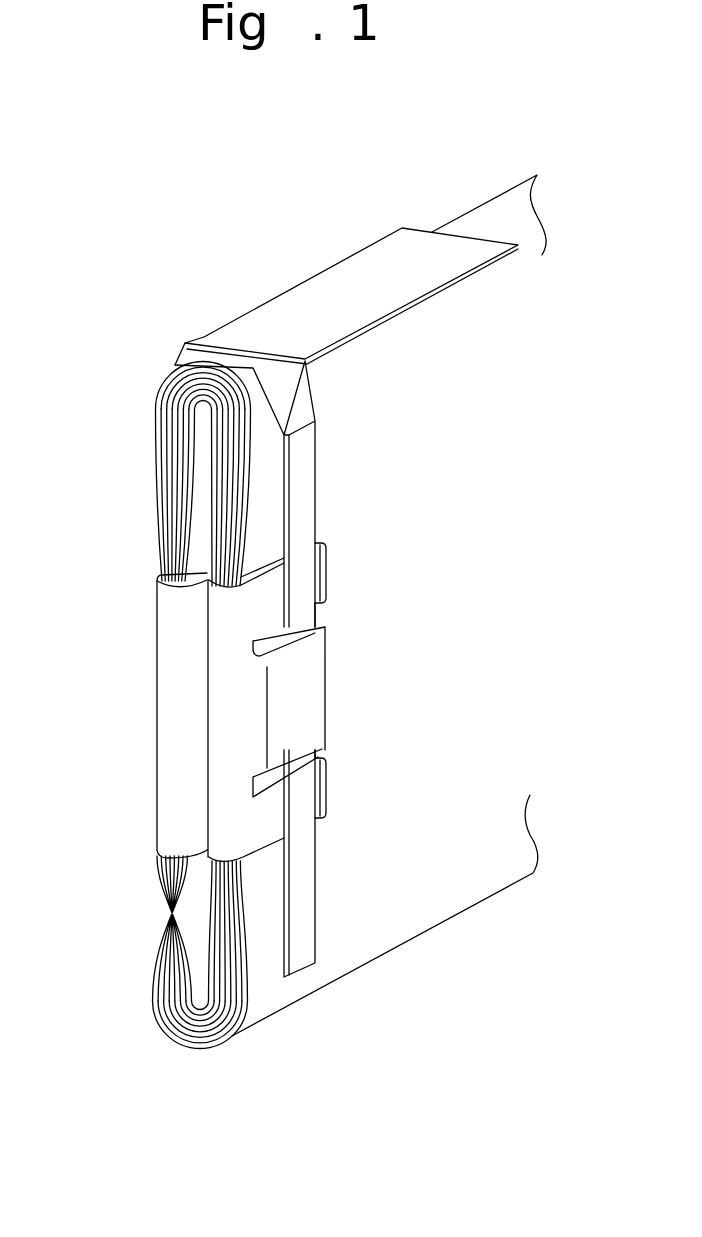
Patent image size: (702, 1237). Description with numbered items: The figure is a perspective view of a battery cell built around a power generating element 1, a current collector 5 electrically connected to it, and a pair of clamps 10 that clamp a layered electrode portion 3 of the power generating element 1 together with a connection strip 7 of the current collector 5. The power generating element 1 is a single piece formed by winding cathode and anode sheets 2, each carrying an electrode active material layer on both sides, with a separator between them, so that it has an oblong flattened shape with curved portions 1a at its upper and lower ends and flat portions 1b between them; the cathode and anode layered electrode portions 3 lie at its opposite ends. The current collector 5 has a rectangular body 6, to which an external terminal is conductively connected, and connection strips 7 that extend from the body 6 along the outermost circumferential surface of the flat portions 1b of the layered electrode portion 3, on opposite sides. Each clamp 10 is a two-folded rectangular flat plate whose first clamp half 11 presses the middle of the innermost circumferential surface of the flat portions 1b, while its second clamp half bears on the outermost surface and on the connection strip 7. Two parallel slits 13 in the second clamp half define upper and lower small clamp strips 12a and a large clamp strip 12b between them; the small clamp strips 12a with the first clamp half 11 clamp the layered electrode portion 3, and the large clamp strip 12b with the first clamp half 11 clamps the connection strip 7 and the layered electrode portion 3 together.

The power generating element 1 is at (458, 927).
The curved portion 1a is at (207, 364).
The flat portion 1b is at (161, 528).
The cathode and anode sheets 2 is at (360, 935).
The layered electrode portion 3 is at (168, 940).
The current collector 5 is at (283, 283).
The body 6 is at (371, 268).
The connection strip 7 is at (176, 366).
The clamp 10 is at (161, 710).
The first clamp half 11 is at (202, 580).
The small clamp strip 12a is at (320, 572).
The large clamp strip 12b is at (306, 692).
The slit 13 is at (322, 617).